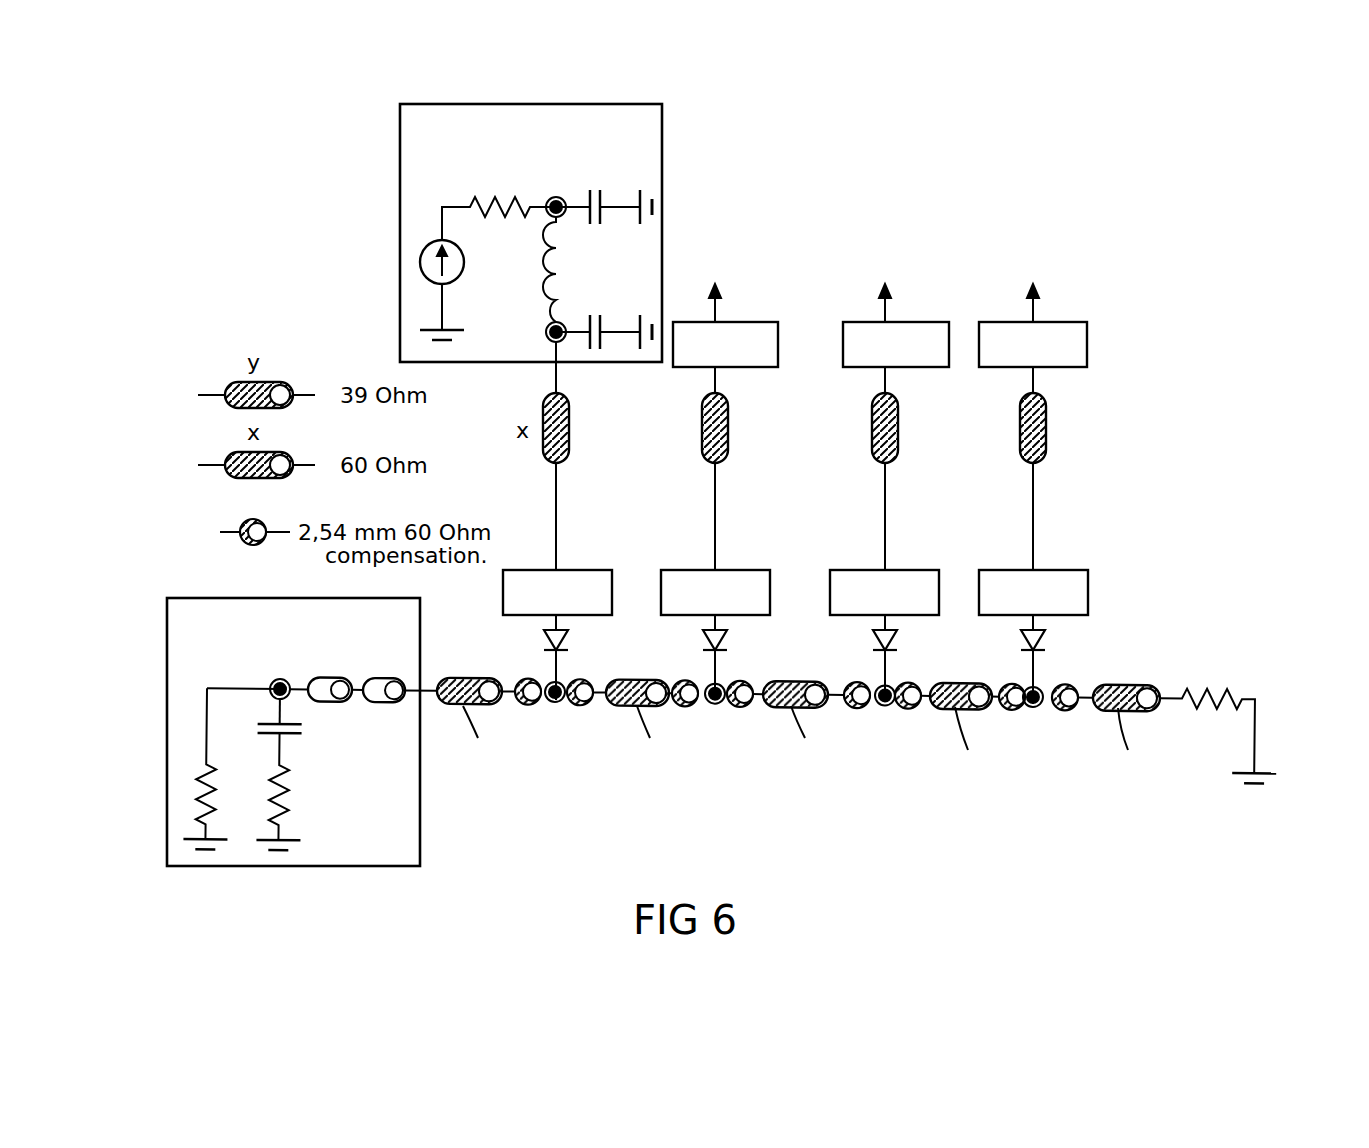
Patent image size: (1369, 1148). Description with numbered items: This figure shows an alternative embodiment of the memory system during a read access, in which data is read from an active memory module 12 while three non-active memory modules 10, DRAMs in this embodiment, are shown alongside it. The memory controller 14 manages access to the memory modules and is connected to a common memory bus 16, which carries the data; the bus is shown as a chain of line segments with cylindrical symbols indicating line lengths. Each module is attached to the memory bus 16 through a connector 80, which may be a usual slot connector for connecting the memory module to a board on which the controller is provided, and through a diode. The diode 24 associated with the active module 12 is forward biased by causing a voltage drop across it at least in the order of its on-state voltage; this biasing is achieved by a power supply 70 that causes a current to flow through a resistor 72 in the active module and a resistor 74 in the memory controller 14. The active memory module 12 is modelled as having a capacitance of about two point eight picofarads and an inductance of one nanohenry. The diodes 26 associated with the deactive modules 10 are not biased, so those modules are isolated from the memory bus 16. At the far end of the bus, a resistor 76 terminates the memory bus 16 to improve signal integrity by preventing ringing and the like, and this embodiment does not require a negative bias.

The memory module 12 is at (495, 104).
The power supply 70 is at (420, 250).
The resistor 72 is at (528, 206).
The memory modules 10 is at (768, 322).
The connectors 80 is at (582, 570).
The diode 24 is at (566, 641).
The diodes 26 is at (725, 641).
The memory controller 14 is at (370, 866).
The resistor 74 is at (200, 787).
The memory bus 16 is at (874, 754).
The resistor 76 is at (1233, 702).